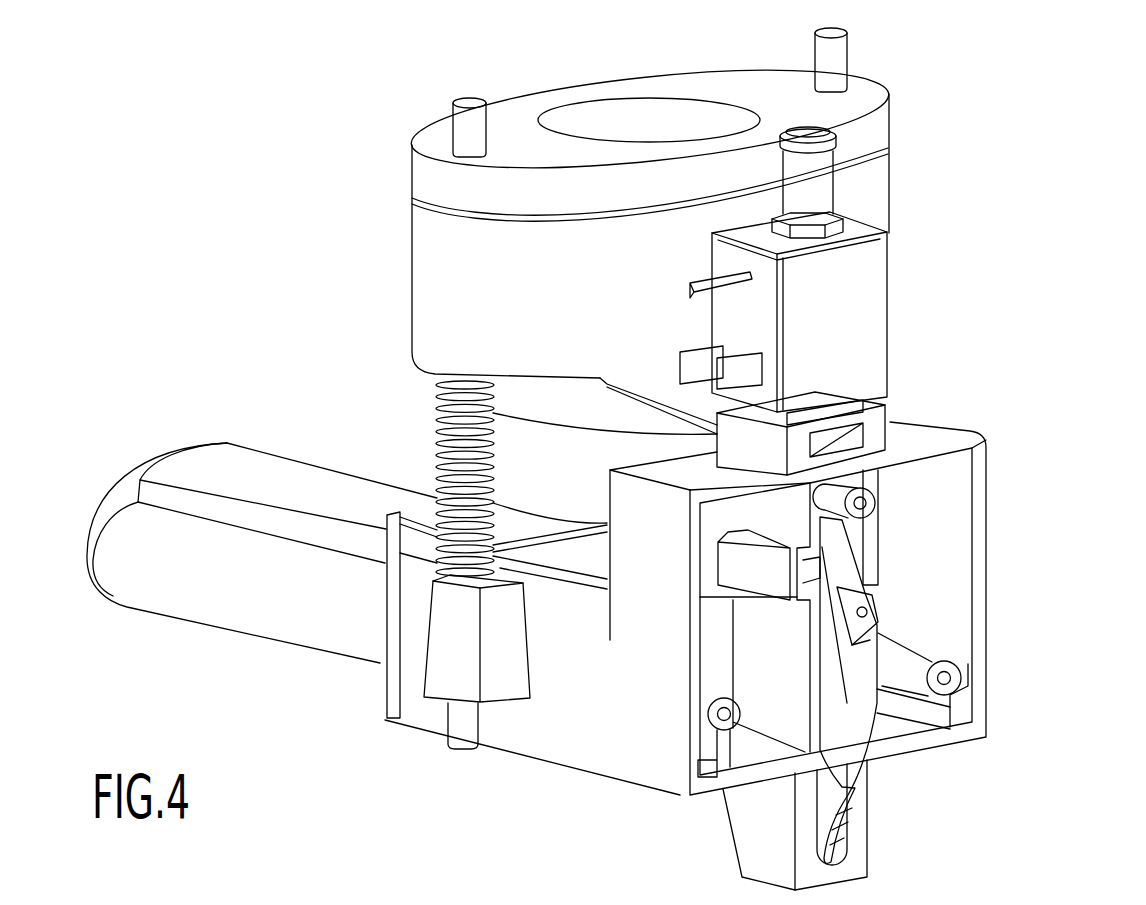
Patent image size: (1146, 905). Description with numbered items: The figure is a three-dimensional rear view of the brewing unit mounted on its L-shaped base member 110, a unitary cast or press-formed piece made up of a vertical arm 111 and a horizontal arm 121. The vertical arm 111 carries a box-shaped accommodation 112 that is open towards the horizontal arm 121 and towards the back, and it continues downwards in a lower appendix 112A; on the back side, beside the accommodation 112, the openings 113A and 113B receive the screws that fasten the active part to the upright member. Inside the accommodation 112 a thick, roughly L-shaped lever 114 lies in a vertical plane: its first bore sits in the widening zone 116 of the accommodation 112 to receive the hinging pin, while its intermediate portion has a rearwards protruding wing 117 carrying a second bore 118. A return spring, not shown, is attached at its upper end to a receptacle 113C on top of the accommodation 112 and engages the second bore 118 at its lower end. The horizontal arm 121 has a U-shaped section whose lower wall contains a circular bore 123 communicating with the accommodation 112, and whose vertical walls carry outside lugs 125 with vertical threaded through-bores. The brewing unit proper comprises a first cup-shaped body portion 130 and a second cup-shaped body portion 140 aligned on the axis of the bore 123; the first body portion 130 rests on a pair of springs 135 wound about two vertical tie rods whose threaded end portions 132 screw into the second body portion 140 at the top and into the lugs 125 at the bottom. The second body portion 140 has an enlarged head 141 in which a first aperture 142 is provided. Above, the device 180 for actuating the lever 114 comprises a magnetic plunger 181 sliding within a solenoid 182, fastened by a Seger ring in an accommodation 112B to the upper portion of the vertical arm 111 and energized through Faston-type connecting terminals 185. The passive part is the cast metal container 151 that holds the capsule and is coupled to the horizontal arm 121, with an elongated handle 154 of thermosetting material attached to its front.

The L-shaped base member 110 is at (577, 783).
The vertical arm 111 is at (978, 555).
The box-shaped accommodation 112 is at (777, 642).
The lower appendix 112A is at (750, 820).
The accommodation 112B is at (865, 438).
The opening 113A is at (712, 733).
The opening 113B is at (950, 668).
The receptacle 113C is at (865, 500).
The lever 114 is at (880, 725).
The widening zone 116 is at (875, 548).
The rearwards protruding wing 117 is at (870, 628).
The second bore 118 is at (862, 610).
The horizontal arm 121 is at (548, 742).
The circular bore 123 is at (597, 557).
The lugs 125 is at (447, 685).
The first cup-shaped body portion 130 is at (412, 254).
The threaded end portions 132 is at (458, 115).
The springs 135 is at (437, 447).
The second cup-shaped body portion 140 is at (541, 89).
The enlarged head 141 is at (877, 132).
The first aperture 142 is at (663, 117).
The metal container 151 is at (437, 587).
The elongated handle 154 is at (250, 623).
The device for actuating the lever 180 is at (900, 297).
The plunger 181 is at (818, 193).
The solenoid 182 is at (860, 247).
The connecting terminals 185 is at (740, 358).